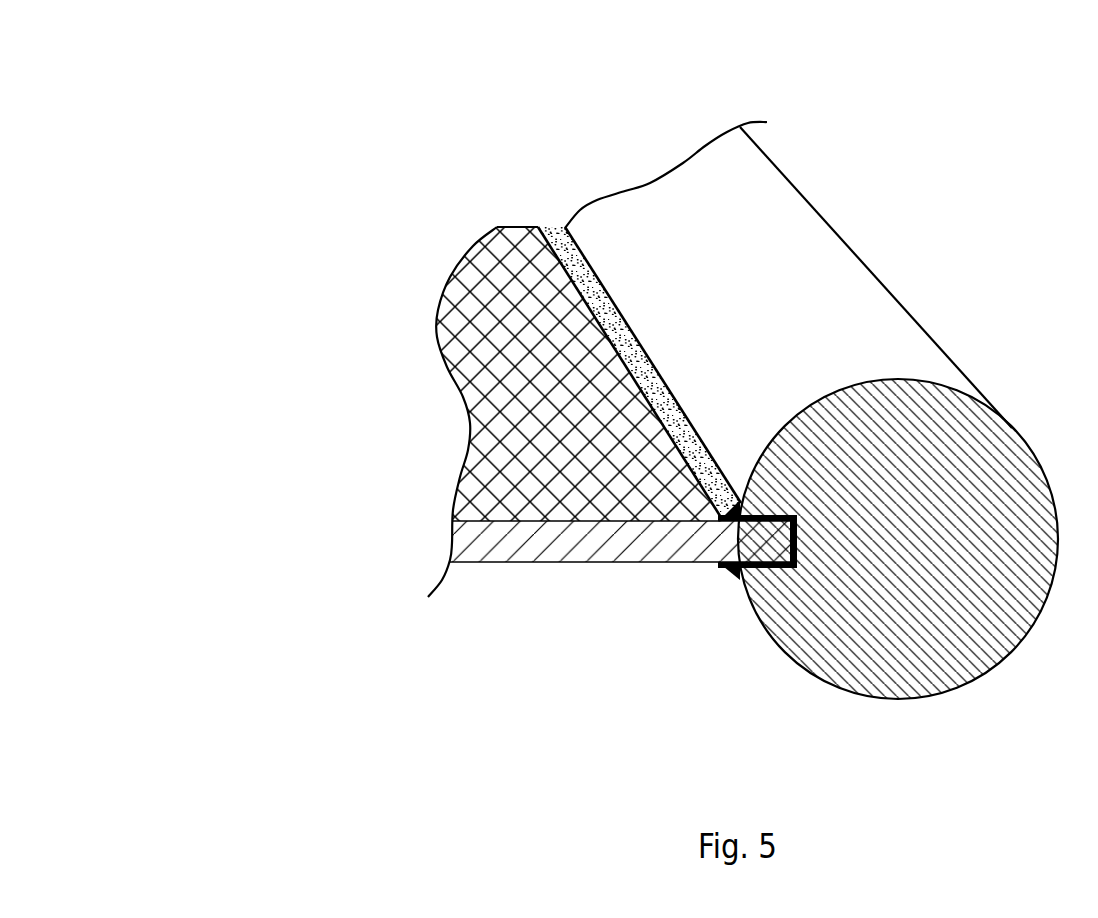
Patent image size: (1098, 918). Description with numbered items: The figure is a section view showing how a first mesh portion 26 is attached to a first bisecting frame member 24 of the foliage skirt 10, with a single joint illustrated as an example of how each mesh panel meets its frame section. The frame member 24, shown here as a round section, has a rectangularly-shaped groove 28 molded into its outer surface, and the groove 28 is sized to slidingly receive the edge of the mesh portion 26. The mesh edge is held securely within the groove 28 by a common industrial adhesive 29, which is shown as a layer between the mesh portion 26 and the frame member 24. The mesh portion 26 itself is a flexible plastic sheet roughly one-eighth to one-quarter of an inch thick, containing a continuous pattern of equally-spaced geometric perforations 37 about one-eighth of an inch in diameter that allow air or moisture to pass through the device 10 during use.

The foliage skirt 10 is at (254, 113).
The first bisecting frame member 24 is at (912, 378).
The first mesh portion 26 is at (462, 538).
The rectangularly-shaped groove 28 is at (742, 582).
The industrial adhesive 29 is at (567, 248).
The geometric perforations 37 is at (462, 342).